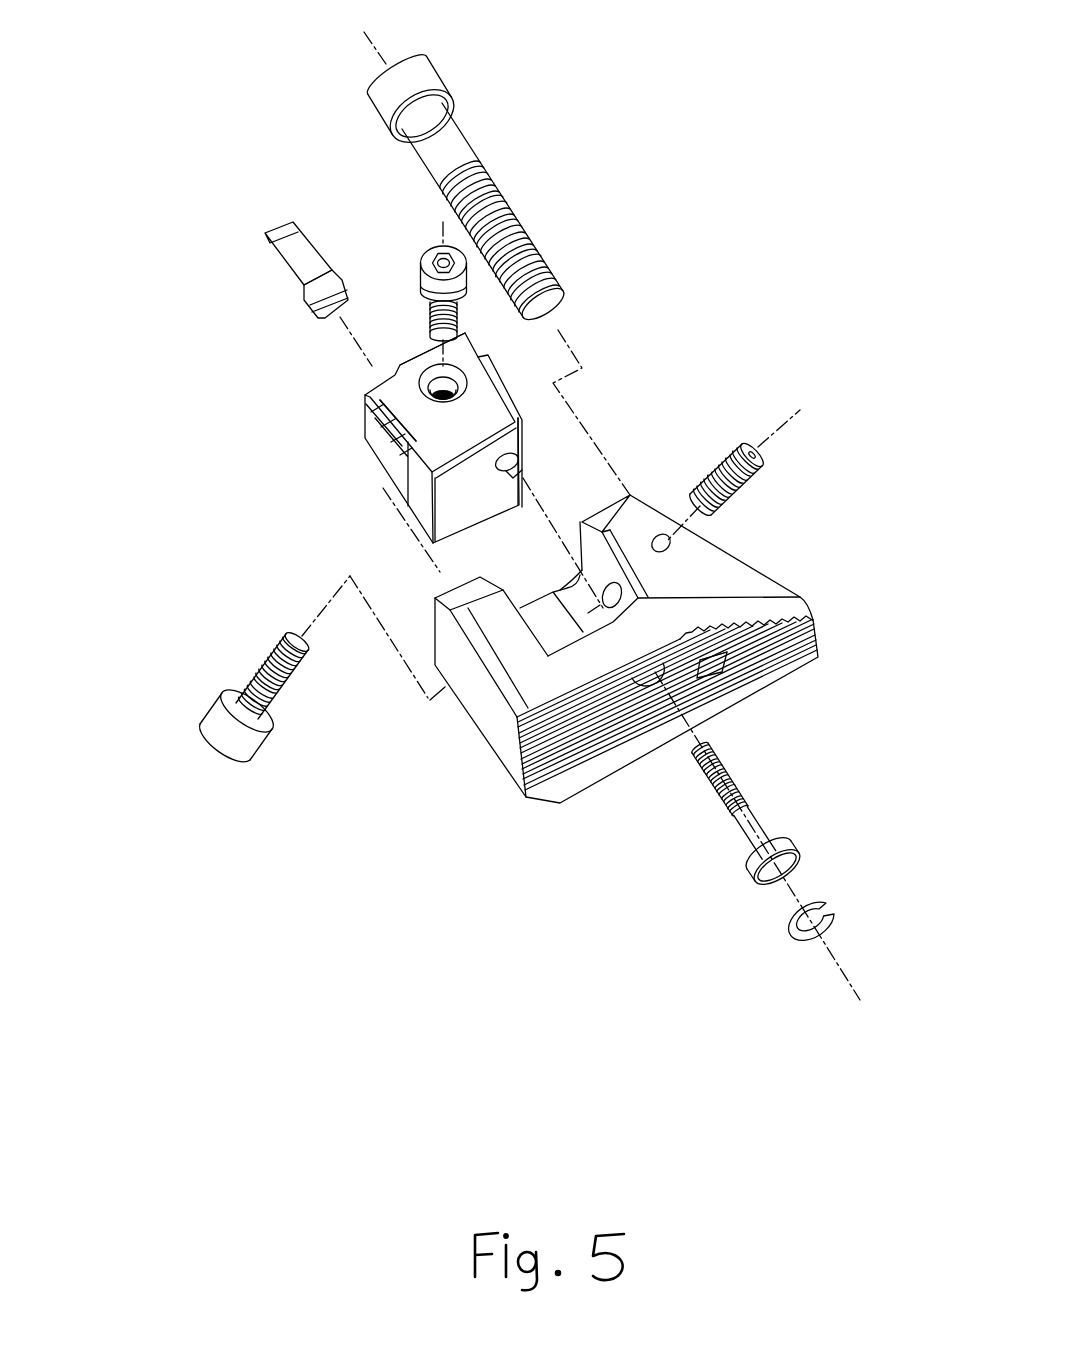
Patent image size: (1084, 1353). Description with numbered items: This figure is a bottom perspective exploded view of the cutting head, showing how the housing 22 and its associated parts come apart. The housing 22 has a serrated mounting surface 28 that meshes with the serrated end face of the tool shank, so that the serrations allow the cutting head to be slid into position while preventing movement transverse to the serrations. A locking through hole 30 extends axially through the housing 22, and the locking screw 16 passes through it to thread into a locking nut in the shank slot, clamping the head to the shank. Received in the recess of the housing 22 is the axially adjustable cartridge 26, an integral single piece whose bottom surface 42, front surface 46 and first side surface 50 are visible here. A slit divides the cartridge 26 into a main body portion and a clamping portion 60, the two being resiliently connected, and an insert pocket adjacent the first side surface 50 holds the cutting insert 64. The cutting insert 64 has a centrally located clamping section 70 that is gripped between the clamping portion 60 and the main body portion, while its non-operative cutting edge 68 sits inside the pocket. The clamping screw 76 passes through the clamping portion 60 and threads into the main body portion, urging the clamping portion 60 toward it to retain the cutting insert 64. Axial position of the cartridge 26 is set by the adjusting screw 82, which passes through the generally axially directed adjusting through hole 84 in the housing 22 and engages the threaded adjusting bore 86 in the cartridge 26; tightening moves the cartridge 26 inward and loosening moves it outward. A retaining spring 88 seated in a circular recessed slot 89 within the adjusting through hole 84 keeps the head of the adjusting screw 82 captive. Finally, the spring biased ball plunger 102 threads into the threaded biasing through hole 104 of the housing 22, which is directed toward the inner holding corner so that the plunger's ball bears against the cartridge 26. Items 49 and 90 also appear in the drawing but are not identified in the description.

The locking screw 16 is at (415, 75).
The housing 22 is at (651, 676).
The cartridge 26 is at (432, 406).
The serrated mounting surface 28 is at (567, 738).
The locking through hole 30 is at (727, 667).
The bottom surface 42 is at (445, 406).
The front surface 46 is at (465, 420).
The rib 49 is at (402, 507).
The first side surface 50 is at (385, 424).
The clamping portion 60 is at (413, 378).
The cutting insert 64 is at (270, 183).
The non-operative cutting edge 68 is at (302, 243).
The clamping section 70 is at (308, 263).
The clamping screw 76 is at (438, 253).
The adjusting screw 82 is at (753, 855).
The adjusting through hole 84 is at (648, 670).
The threaded adjusting bore 86 is at (516, 458).
The retaining spring 88 is at (790, 933).
The circular recessed slot 89 is at (663, 678).
The socket head screw 90 is at (220, 731).
The spring biased ball plunger 102 is at (752, 445).
The threaded biasing through hole 104 is at (635, 600).